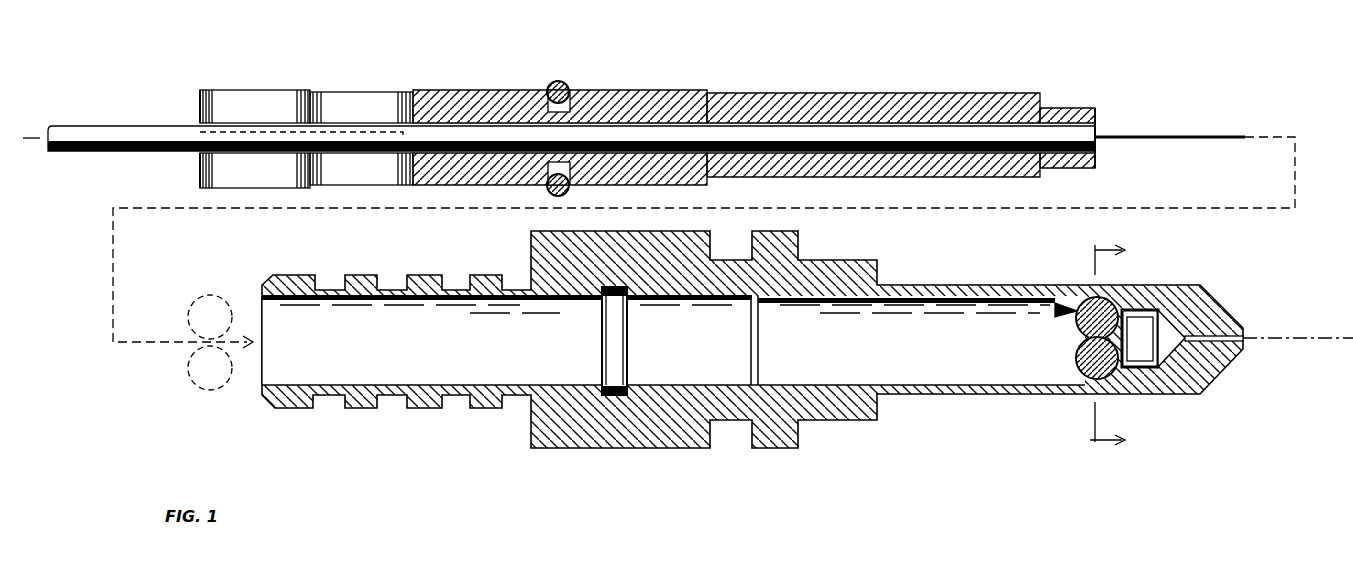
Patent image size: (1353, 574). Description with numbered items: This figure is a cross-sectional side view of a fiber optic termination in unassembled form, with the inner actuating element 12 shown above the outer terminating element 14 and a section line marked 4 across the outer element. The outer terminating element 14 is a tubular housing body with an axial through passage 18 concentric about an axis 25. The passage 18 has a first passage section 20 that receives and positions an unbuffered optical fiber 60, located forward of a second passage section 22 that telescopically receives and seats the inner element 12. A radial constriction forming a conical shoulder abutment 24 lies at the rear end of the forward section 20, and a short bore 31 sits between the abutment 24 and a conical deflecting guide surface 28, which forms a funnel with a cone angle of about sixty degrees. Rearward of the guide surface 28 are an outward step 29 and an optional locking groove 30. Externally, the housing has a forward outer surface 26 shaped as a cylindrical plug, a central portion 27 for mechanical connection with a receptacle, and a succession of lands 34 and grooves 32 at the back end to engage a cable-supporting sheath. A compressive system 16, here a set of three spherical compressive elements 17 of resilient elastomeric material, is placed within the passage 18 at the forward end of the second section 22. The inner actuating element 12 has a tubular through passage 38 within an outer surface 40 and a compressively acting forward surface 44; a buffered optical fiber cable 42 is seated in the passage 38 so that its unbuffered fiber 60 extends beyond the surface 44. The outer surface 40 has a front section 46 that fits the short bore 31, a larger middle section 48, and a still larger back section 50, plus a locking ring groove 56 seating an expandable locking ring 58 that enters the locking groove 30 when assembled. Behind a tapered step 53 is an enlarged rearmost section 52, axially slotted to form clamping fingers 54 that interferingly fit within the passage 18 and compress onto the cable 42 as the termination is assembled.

The inner actuating element 12 is at (911, 92).
The outer terminating element 14 is at (935, 397).
The compressive system 16 is at (1058, 286).
The compressive element 17 is at (1072, 322).
The axial through passage 18 is at (935, 348).
The first passage section 20 is at (1223, 330).
The second passage section 22 is at (473, 387).
The shoulder abutment 24 is at (1180, 395).
The axis 25 is at (1276, 336).
The forward outer surface 26 is at (902, 285).
The central portion of outer surface 27 is at (650, 450).
The conical deflecting guide surface 28 is at (1120, 308).
The outward step 29 is at (768, 287).
The locking groove 30 is at (615, 385).
The short bore 31 is at (1160, 298).
The grooves 32 is at (390, 404).
The lands 34 is at (377, 275).
The tubular axial through passage 38 is at (925, 135).
The outer surface 40 is at (728, 93).
The buffered optical fiber cable 42 is at (146, 124).
The compressively acting forward surface 44 is at (1100, 112).
The front section 46 is at (1058, 108).
The middle section 48 is at (818, 93).
The back section 50 is at (637, 90).
The rearmost section 52 is at (245, 90).
The step 53 is at (310, 92).
The clamping fingers 54 is at (200, 100).
The locking ring groove 56 is at (570, 90).
The locking ring 58 is at (550, 83).
The unbuffered optical fiber 60 is at (1165, 137).
The section line 4- 4 is at (1117, 344).